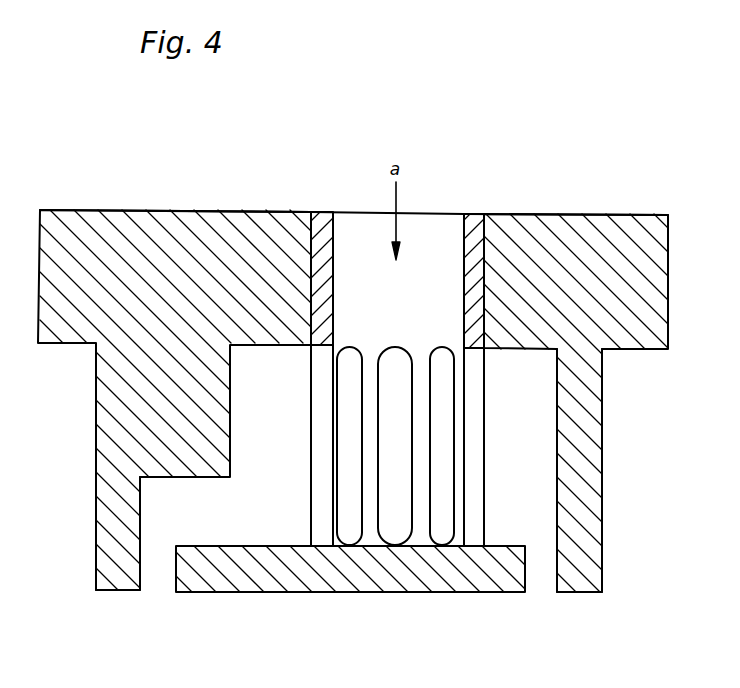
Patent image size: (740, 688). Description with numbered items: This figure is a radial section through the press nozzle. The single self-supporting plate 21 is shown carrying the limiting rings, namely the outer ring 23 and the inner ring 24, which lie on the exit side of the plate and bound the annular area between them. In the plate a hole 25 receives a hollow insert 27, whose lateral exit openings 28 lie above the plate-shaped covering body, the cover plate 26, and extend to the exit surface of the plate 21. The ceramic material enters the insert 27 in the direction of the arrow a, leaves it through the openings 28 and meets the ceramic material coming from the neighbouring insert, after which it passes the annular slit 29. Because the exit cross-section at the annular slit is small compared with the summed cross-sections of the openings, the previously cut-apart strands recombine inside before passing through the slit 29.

The self-supporting plate 21 is at (186, 212).
The outer ring 23 is at (103, 532).
The inner ring 24 is at (585, 500).
The hole 25 is at (425, 232).
The cover plate 26 is at (262, 583).
The hollow insert 27 is at (476, 228).
The lateral exit openings 28 is at (322, 431).
The annular slit 29 is at (157, 578).